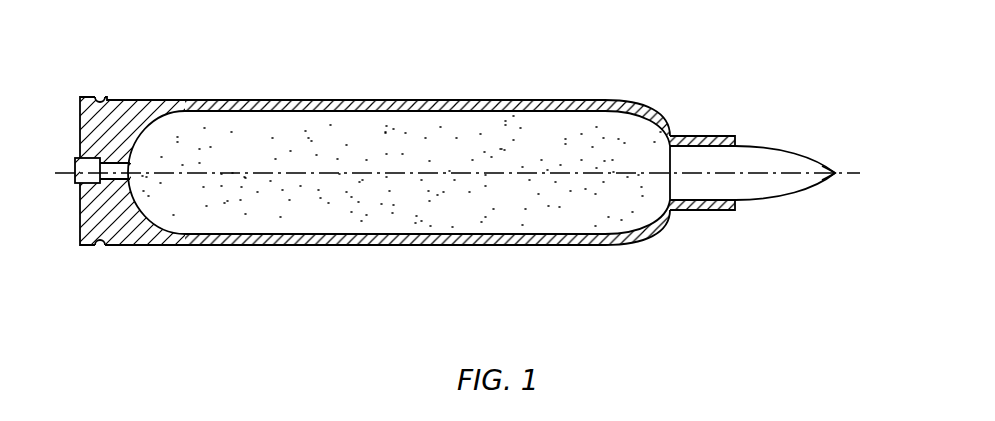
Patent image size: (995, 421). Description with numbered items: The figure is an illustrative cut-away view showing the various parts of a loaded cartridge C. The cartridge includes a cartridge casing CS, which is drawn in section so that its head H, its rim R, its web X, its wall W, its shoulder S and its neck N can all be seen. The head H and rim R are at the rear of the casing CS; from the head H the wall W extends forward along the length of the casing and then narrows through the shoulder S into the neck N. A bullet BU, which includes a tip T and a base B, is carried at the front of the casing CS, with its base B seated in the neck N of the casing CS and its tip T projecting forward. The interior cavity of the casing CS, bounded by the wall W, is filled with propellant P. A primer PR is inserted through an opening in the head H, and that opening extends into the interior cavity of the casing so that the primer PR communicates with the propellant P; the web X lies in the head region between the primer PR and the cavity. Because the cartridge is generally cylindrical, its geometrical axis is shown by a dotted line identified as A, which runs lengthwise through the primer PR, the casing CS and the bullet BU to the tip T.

The loaded cartridge C is at (257, 266).
The cartridge casing CS is at (398, 86).
The head H is at (87, 97).
The rim R is at (101, 97).
The wall W is at (138, 126).
The primer PR is at (75, 185).
The web X is at (135, 216).
The propellant P is at (529, 206).
The shoulder S is at (648, 233).
The neck N is at (705, 212).
The base B is at (671, 172).
The bullet BU is at (778, 132).
The tip T is at (831, 167).
The geometrical axis A is at (469, 174).